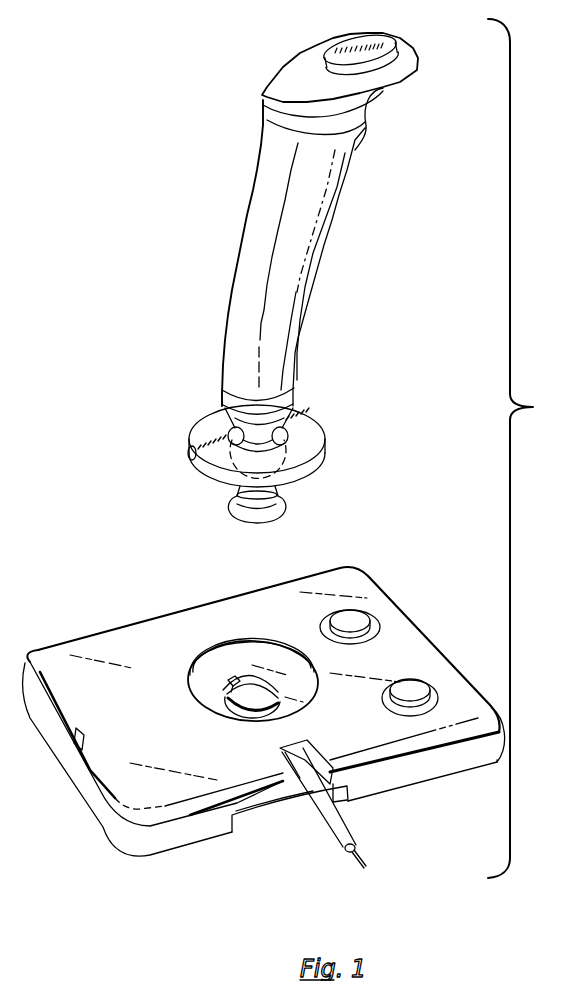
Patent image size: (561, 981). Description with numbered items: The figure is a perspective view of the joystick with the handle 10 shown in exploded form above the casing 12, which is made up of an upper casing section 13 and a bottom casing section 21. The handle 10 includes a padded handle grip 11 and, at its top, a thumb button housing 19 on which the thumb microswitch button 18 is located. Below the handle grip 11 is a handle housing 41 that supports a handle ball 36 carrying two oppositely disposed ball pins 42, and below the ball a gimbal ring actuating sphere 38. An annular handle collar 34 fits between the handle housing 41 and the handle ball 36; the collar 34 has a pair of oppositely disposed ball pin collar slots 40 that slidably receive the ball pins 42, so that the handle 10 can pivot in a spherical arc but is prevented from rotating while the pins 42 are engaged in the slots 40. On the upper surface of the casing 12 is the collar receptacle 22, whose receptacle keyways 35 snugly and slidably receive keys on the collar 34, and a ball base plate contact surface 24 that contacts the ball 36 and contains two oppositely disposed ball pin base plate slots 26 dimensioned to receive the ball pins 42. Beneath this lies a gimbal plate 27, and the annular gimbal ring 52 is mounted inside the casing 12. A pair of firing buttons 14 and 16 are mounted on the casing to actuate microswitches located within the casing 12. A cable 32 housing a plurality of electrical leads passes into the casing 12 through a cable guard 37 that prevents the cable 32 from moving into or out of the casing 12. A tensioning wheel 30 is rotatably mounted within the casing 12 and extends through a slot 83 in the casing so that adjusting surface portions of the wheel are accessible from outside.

The handle 10 is at (331, 245).
The padded handle grip 11 is at (294, 297).
The thumb microswitch button 18 is at (383, 43).
The thumb button housing 19 is at (381, 92).
The handle housing 41 is at (297, 394).
The annular handle collar 34 is at (316, 419).
The handle ball 36 is at (287, 435).
The ball pin collar slots 40 is at (231, 425).
The ball pins 42 is at (304, 444).
The gimbal ring actuating sphere 38 is at (280, 506).
The casing 12 is at (368, 585).
The firing button 14 is at (359, 618).
The firing button 16 is at (413, 693).
The collar receptacle 22 is at (206, 691).
The receptacle keyways 35 is at (265, 653).
The ball pin base plate slots 26 is at (228, 677).
The gimbal plate 27 is at (236, 676).
The ball base plate contact surface 24 is at (226, 694).
The annular gimbal ring 52 is at (264, 701).
The cable guard 37 is at (309, 743).
The upper casing section 13 is at (394, 751).
The bottom casing section 21 is at (450, 757).
The cable 32 is at (351, 834).
The tensioning wheel 30 is at (267, 818).
The slot 83 is at (240, 831).